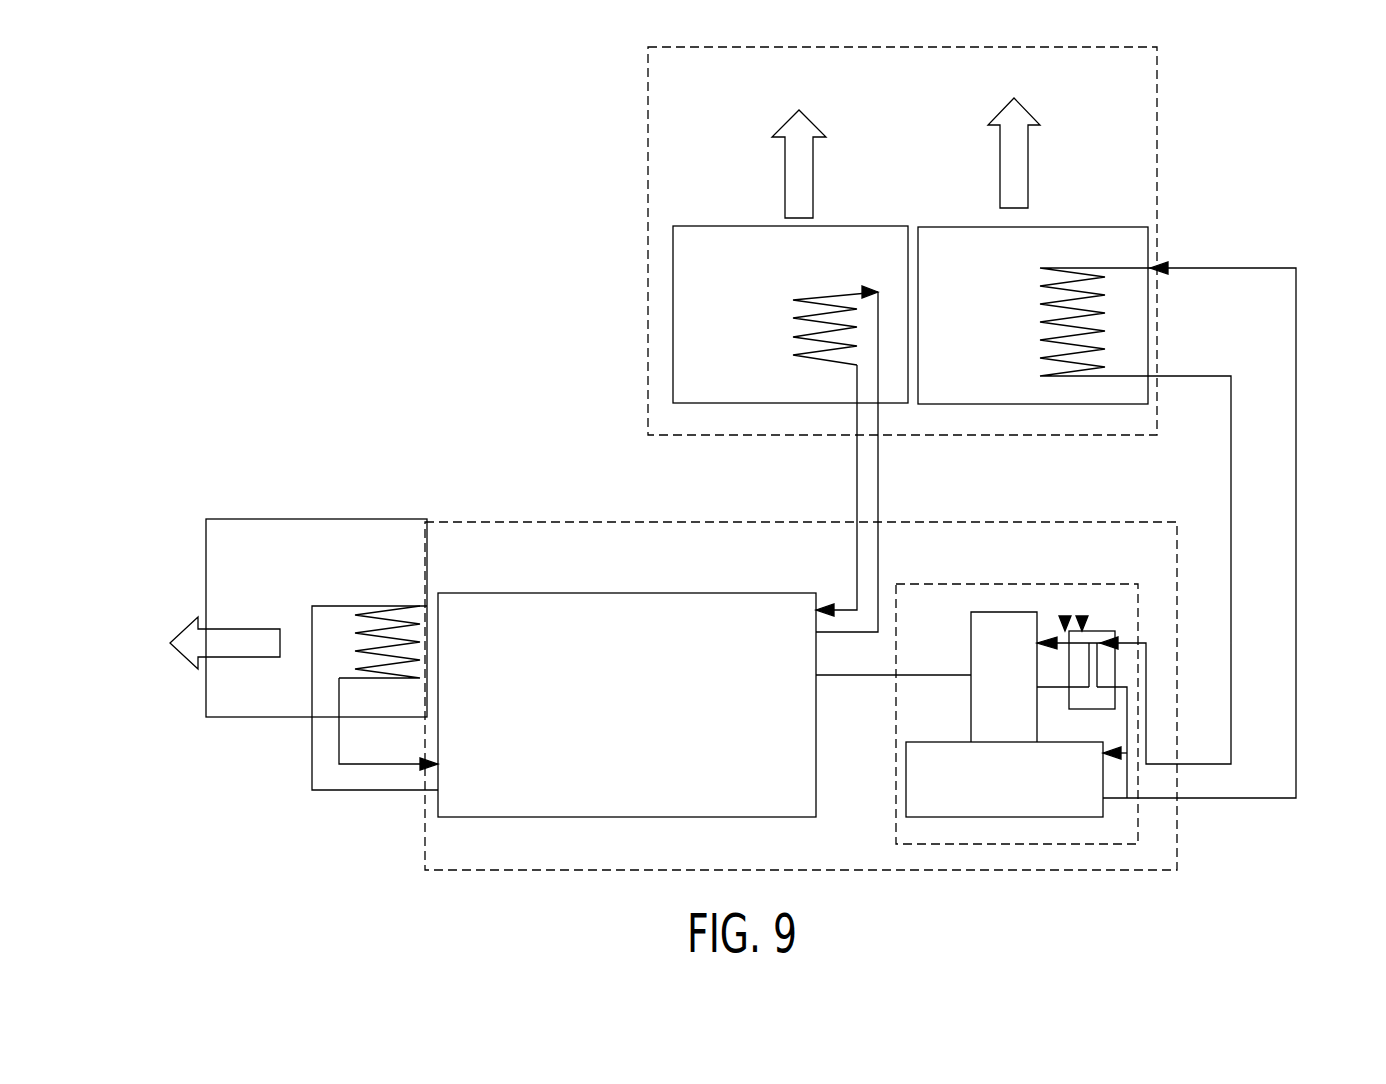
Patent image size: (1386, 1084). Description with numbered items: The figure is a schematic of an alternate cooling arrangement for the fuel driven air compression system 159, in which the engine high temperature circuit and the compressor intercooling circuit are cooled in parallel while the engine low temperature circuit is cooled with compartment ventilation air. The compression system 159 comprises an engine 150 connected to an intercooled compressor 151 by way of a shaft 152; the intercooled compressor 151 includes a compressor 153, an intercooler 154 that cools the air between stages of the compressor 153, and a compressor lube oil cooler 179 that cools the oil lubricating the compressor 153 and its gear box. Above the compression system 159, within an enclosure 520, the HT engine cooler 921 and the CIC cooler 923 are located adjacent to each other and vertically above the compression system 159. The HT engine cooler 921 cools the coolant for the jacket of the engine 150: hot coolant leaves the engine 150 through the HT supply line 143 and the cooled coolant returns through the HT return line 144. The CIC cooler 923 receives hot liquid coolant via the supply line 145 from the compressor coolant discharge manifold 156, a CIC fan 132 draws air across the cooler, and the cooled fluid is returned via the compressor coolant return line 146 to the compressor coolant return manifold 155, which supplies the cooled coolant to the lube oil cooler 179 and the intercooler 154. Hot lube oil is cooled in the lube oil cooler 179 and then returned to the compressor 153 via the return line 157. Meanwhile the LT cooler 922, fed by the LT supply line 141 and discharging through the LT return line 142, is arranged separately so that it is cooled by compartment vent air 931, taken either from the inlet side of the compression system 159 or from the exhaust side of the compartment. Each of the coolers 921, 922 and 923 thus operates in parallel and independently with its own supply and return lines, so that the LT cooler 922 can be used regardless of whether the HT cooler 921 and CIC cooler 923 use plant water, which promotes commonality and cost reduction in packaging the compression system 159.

The heat exchanger unit 520 is at (1160, 165).
The CIC fan 132 is at (1000, 172).
The HT engine cooler 921 is at (793, 337).
The CIC cooler 923 is at (1040, 322).
The LT cooler 922 is at (348, 606).
The compartment vent air 931 is at (252, 629).
The LT supply line 141 is at (878, 495).
The LT return line 142 is at (857, 495).
The HT supply line 143 is at (312, 785).
The HT return line 144 is at (338, 732).
The supply line 145 is at (1296, 522).
The compressor coolant return line 146 is at (1231, 497).
The engine 150 is at (592, 593).
The intercooled compressor 151 is at (975, 583).
The shaft 152 is at (867, 677).
The compressor 153 is at (971, 697).
The intercooler 154 is at (1015, 817).
The compressor coolant return manifold 155 is at (1146, 676).
The compressor coolant discharge manifold 156 is at (1128, 742).
The return line 157 is at (1065, 618).
The compressor lube oil cooler 179 is at (1082, 618).
The fuel driven air compression system 159 is at (652, 520).